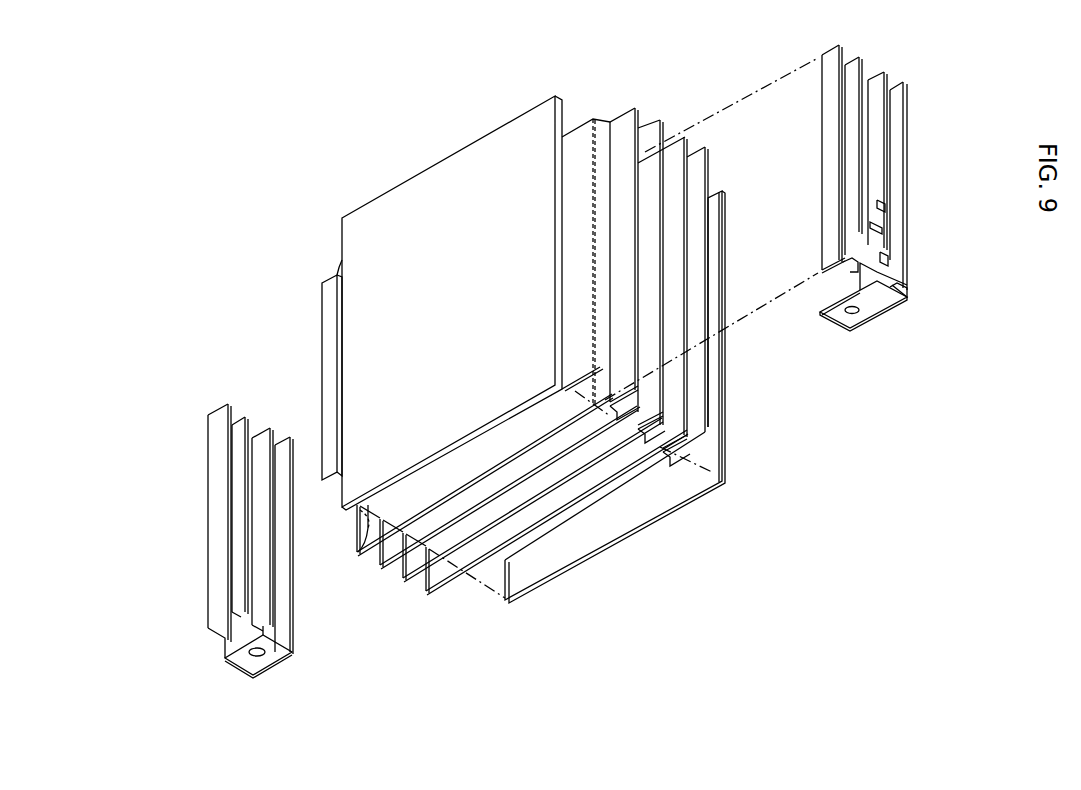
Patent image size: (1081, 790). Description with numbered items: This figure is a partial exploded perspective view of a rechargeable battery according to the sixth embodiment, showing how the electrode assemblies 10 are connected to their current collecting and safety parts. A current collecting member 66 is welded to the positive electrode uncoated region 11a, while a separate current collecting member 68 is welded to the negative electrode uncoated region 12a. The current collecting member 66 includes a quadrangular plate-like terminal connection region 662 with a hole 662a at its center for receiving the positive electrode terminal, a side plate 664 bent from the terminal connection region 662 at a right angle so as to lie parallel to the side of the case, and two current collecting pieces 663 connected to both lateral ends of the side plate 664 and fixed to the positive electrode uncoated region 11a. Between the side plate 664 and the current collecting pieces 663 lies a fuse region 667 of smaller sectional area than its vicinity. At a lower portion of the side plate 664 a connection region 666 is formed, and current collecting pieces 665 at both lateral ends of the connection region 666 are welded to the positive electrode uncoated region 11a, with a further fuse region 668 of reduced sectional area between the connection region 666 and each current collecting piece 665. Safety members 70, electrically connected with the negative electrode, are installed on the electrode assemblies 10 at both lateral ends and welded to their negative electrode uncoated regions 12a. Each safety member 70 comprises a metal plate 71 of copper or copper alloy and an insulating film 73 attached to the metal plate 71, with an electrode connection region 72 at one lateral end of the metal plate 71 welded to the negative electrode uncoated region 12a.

The electrode assembly 10 is at (630, 495).
The positive electrode uncoated region 11a is at (628, 128).
The negative electrode uncoated region 12a is at (360, 552).
The current collecting member 66 is at (868, 214).
The terminal connection region 662 is at (838, 318).
The hole 662a is at (858, 313).
The current collecting piece 663 is at (893, 135).
The side plate 664 is at (890, 272).
The current collecting piece 665 is at (876, 108).
The connection region 666 is at (876, 226).
The fuse region 667 is at (900, 285).
The fuse region 668 is at (880, 205).
The current collecting member 68 is at (196, 587).
The safety member 70 is at (415, 167).
The metal plate 71 is at (392, 213).
The electrode connection region 72 is at (330, 312).
The insulating film 73 is at (366, 528).